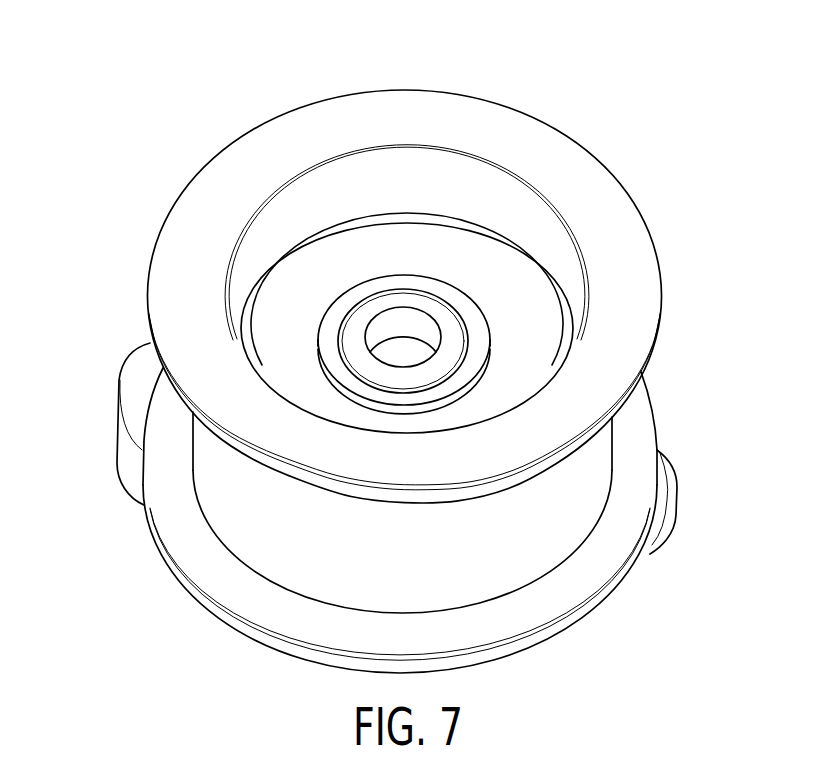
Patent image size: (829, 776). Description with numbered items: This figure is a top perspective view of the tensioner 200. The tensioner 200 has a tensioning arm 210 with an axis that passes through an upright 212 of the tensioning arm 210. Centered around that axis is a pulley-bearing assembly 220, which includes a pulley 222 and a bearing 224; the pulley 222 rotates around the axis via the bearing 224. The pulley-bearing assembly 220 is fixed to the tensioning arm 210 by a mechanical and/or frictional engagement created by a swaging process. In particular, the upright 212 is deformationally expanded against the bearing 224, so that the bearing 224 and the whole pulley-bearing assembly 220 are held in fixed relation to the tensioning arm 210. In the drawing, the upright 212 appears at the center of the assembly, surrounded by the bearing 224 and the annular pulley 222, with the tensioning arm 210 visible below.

The tensioner 200 is at (197, 92).
The tensioning arm 210 is at (117, 352).
The upright 212 is at (462, 318).
The pulley-bearing assembly 220 is at (568, 120).
The pulley 222 is at (607, 168).
The bearing 224 is at (363, 213).